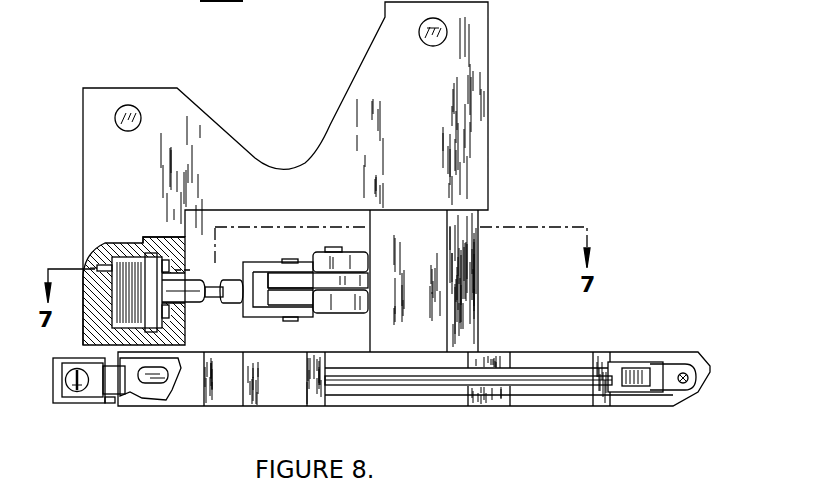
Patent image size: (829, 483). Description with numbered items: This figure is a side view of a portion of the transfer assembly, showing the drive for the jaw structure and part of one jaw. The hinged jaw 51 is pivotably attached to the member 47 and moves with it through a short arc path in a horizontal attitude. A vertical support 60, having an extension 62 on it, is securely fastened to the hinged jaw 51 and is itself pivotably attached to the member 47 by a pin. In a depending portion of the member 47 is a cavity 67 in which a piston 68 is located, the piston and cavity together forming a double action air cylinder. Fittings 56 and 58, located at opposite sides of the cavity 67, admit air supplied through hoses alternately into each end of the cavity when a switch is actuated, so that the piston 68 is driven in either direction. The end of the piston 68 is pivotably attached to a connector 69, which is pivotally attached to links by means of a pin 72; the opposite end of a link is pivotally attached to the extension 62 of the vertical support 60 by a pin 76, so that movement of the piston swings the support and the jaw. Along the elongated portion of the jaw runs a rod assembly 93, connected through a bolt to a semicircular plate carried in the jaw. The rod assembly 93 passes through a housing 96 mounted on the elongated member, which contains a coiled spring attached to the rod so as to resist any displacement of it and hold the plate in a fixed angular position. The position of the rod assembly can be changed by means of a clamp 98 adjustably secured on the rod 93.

The member 47 is at (319, 197).
The hinged jaw 51 is at (575, 397).
The fitting 56 is at (208, 249).
The fitting 58 is at (100, 266).
The vertical support 60 is at (433, 243).
The extension 62 is at (342, 307).
The cavity 67 is at (152, 292).
The piston 68 is at (158, 240).
The connector 69 is at (258, 312).
The pin 72 is at (293, 261).
The pin 76 is at (333, 314).
The rod assembly 93 is at (368, 385).
The housing 96 is at (226, 401).
The clamp 98 is at (70, 401).